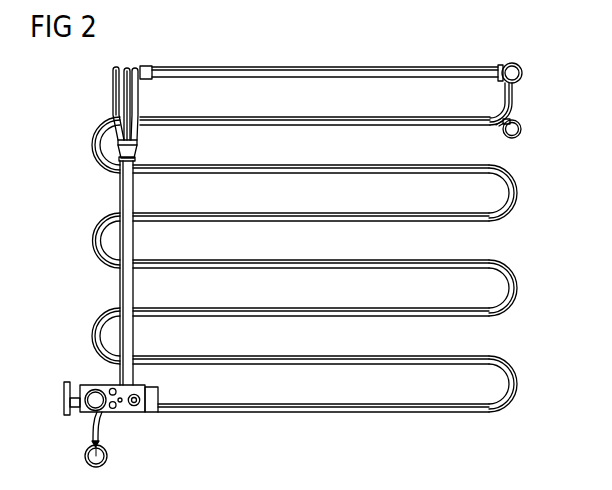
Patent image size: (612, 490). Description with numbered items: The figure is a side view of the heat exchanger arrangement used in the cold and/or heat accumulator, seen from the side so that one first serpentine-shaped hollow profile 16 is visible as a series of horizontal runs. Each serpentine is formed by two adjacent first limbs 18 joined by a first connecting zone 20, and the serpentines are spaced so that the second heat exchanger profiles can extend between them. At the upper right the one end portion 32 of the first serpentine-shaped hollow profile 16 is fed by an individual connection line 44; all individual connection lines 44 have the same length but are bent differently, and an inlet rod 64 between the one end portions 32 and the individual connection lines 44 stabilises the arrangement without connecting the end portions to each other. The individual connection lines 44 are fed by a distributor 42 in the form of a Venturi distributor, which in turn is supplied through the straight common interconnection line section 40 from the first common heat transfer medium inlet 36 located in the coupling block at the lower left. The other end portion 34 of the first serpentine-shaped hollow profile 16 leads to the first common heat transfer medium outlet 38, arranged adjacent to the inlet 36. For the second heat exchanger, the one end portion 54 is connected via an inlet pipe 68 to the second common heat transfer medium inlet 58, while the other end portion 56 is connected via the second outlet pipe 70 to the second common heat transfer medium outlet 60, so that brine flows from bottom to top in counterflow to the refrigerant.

The first serpentine-shaped hollow profile 16 is at (513, 377).
The first limb 18 is at (252, 317).
The first connecting zone 20 is at (93, 336).
The one end portion 32 is at (513, 86).
The other end portion 34 is at (165, 410).
The first common heat transfer medium inlet 36 is at (135, 407).
The first common heat transfer medium outlet 38 is at (64, 400).
The common interconnection line section 40 is at (120, 286).
The distributor 42 is at (133, 153).
The individual connection line 44 is at (318, 67).
The one end portion 54 is at (92, 431).
The other end portion 56 is at (497, 124).
The second common heat transfer medium inlet 58 is at (87, 457).
The second common heat transfer medium outlet 60 is at (521, 132).
The inlet rod 64 is at (513, 64).
The inlet pipe 68 is at (107, 456).
The second outlet pipe 70 is at (511, 121).